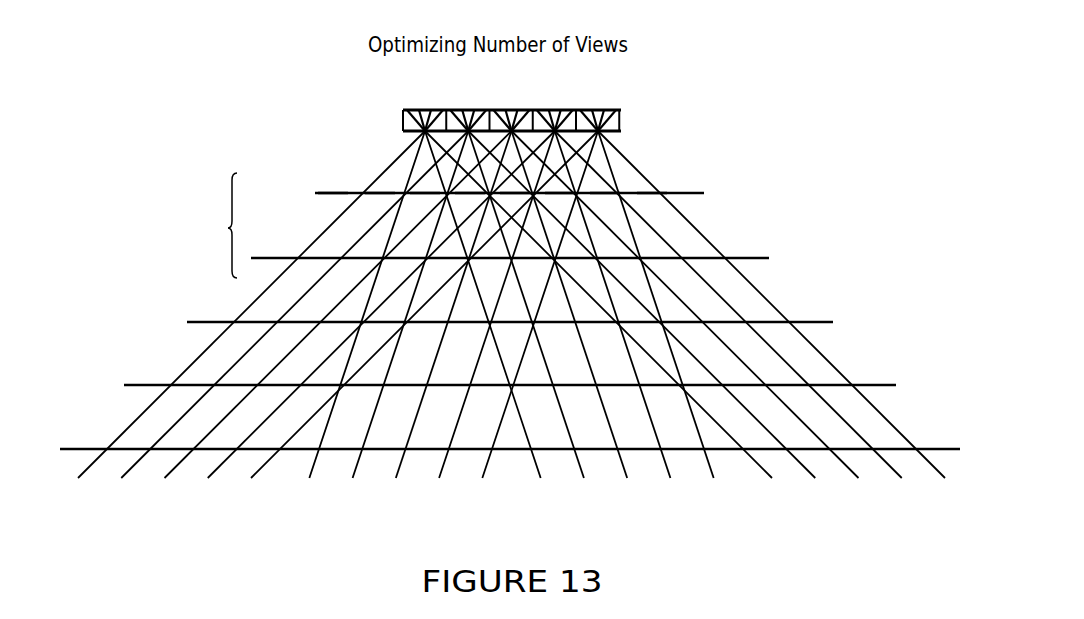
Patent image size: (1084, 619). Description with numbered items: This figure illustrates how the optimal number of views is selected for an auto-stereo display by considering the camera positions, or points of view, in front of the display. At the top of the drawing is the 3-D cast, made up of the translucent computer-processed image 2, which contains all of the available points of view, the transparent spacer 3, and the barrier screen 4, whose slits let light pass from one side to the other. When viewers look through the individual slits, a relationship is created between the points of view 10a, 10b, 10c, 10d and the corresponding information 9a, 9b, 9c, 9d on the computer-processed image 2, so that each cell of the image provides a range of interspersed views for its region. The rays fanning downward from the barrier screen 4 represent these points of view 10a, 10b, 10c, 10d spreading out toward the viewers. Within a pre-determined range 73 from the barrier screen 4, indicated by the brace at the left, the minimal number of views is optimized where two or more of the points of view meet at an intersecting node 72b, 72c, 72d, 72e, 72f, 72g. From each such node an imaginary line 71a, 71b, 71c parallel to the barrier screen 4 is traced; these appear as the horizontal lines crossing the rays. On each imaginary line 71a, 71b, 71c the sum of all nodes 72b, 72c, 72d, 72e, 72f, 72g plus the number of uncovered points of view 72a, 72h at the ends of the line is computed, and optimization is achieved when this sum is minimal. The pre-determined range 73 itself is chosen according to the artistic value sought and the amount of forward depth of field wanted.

The computer-processed image 2 is at (634, 104).
The spacer 3 is at (634, 117).
The barrier screen 4 is at (634, 132).
The corresponding information 9a is at (435, 112).
The corresponding information 9b is at (426, 112).
The corresponding information 9c is at (416, 112).
The corresponding information 9d is at (409, 112).
The point of view 10a is at (330, 312).
The point of view 10b is at (447, 316).
The point of view 10c is at (569, 317).
The point of view 10d is at (685, 315).
The imaginary line 71a is at (712, 189).
The imaginary line 71b is at (776, 252).
The imaginary line 71c is at (842, 317).
The uncovered point of view 72a is at (333, 201).
The intersecting node 72b is at (380, 201).
The intersecting node 72c is at (425, 201).
The intersecting node 72d is at (470, 201).
The intersecting node 72e is at (515, 201).
The intersecting node 72f is at (560, 201).
The intersecting node 72g is at (605, 201).
The uncovered point of view 72h is at (652, 201).
The pre-determined range 73 is at (221, 225).